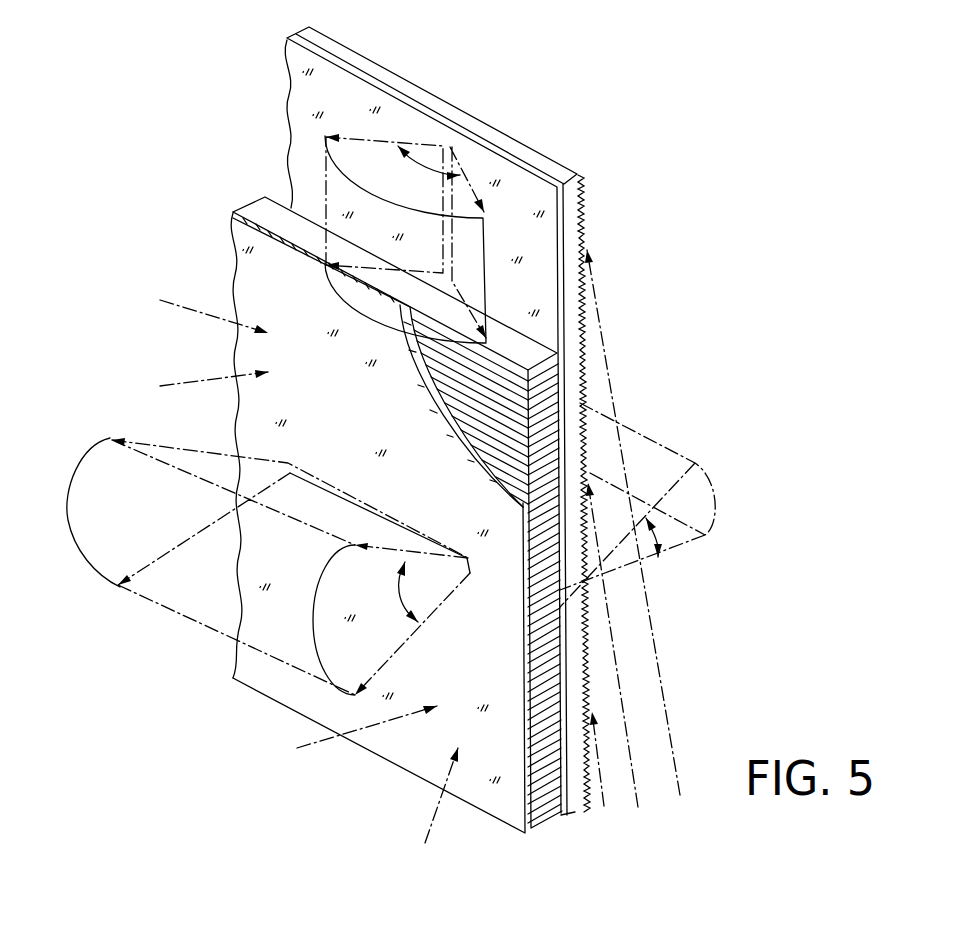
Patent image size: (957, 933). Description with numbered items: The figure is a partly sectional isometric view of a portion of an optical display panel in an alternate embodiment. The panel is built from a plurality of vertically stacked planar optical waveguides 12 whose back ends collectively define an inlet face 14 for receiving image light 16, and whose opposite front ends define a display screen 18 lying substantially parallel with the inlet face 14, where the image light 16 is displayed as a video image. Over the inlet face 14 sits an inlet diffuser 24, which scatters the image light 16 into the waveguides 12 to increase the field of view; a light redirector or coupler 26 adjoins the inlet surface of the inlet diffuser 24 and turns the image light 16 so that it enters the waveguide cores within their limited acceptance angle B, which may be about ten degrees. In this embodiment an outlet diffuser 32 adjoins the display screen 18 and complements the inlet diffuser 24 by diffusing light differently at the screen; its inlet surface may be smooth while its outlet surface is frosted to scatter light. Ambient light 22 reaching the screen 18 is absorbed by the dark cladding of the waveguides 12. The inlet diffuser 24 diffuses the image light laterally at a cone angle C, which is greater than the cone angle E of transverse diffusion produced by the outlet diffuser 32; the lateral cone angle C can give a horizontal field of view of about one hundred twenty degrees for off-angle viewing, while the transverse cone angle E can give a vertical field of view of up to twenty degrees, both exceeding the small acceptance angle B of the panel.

The planar optical waveguides 12 is at (547, 787).
The inlet face 14 is at (560, 363).
The image light 16 is at (326, 139).
The display screen 18 is at (470, 400).
The ambient light 22 is at (198, 308).
The inlet diffuser 24 is at (565, 230).
The light redirector or coupler 26 is at (582, 210).
The outlet diffuser 32 is at (292, 293).
The acceptance angle B is at (662, 537).
The lateral diffusion cone angle C is at (432, 176).
The transverse diffusion cone angle E is at (403, 588).